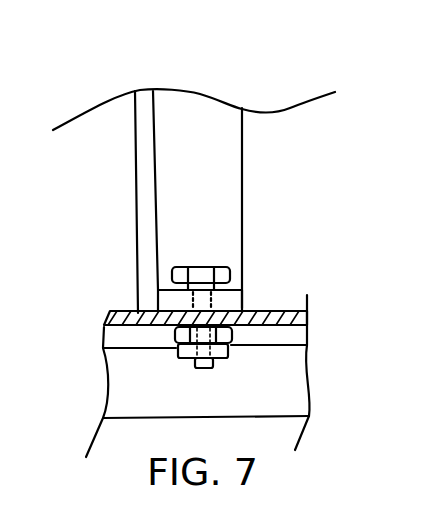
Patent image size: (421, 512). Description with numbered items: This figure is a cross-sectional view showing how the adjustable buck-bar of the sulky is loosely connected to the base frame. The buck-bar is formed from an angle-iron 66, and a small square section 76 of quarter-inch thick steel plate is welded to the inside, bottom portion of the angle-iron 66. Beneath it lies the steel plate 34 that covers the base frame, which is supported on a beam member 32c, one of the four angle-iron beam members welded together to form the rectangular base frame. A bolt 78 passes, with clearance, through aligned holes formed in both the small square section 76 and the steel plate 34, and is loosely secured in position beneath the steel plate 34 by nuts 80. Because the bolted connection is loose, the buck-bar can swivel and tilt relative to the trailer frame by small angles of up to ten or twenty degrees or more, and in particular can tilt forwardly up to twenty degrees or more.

The angle-iron 66 is at (200, 158).
The small square section 76 is at (233, 298).
The bolt 78 is at (226, 268).
The steel plate 34 is at (118, 311).
The beam member 32c is at (294, 403).
The nut 80 is at (174, 350).